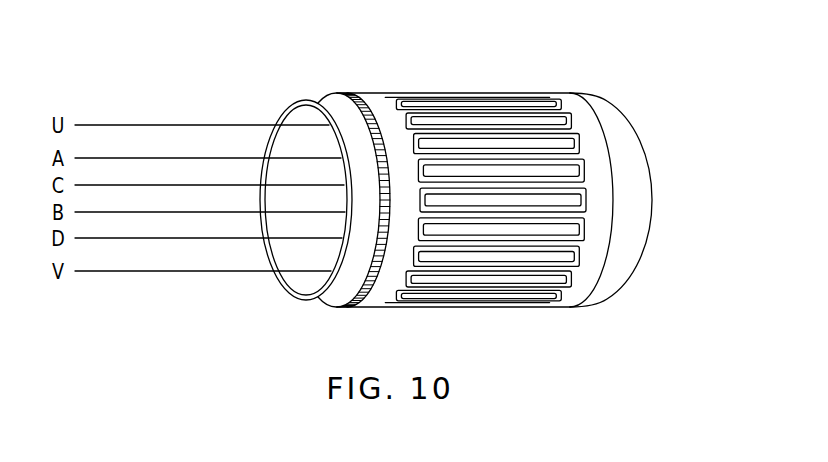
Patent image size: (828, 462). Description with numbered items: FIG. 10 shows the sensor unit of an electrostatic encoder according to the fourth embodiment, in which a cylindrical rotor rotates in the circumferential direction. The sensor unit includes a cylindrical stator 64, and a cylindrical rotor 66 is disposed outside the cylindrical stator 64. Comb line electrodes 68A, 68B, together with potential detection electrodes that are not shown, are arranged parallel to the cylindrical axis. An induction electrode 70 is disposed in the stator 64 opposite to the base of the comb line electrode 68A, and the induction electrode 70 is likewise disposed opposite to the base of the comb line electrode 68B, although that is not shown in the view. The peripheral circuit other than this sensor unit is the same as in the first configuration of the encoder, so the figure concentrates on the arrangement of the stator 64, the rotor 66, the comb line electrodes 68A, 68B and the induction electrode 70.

The cylindrical stator 64 is at (638, 152).
The cylindrical rotor 66 is at (564, 308).
The comb line electrode 68A is at (381, 107).
The comb line electrode 68B is at (567, 106).
The induction electrode 70 is at (347, 306).